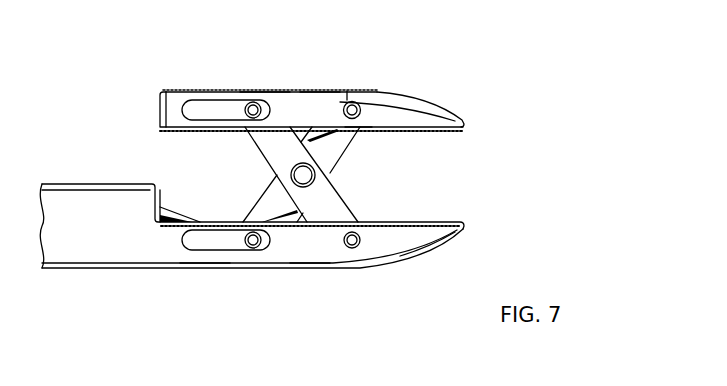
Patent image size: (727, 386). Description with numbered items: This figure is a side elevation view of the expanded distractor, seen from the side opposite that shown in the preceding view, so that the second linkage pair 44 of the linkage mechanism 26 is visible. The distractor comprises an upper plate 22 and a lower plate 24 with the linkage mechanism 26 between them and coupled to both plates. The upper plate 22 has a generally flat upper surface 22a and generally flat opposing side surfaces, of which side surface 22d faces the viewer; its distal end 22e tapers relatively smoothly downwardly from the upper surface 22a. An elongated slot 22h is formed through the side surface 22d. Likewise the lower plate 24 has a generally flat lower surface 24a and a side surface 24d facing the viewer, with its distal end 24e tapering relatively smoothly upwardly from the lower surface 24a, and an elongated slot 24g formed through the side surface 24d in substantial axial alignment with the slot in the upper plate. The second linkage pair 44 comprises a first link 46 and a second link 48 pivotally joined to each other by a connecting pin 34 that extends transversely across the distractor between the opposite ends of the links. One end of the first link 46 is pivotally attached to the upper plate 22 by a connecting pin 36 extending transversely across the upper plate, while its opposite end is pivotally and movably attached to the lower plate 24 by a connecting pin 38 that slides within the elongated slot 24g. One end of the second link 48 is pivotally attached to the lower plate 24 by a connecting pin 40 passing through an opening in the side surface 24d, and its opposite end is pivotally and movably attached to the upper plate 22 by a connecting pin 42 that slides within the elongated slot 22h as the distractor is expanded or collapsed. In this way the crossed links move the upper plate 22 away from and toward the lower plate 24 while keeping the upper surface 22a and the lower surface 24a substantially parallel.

The upper plate 22 is at (293, 90).
The upper surface 22a is at (265, 88).
The side surface 22d is at (312, 110).
The distal end 22e is at (423, 100).
The elongated slot 22h is at (205, 110).
The lower plate 24 is at (328, 252).
The lower surface 24a is at (200, 255).
The side surface 24d is at (307, 250).
The distal end 24e is at (430, 250).
The elongated slot 24g is at (202, 238).
The linkage mechanism 26 is at (316, 174).
The connecting pin 34 is at (290, 173).
The connecting pin 36 is at (360, 127).
The connecting pin 38 is at (257, 248).
The connecting pin 40 is at (358, 248).
The connecting pin 42 is at (240, 105).
The second linkage pair 44 is at (368, 145).
The first link 46 is at (272, 197).
The second link 48 is at (347, 212).